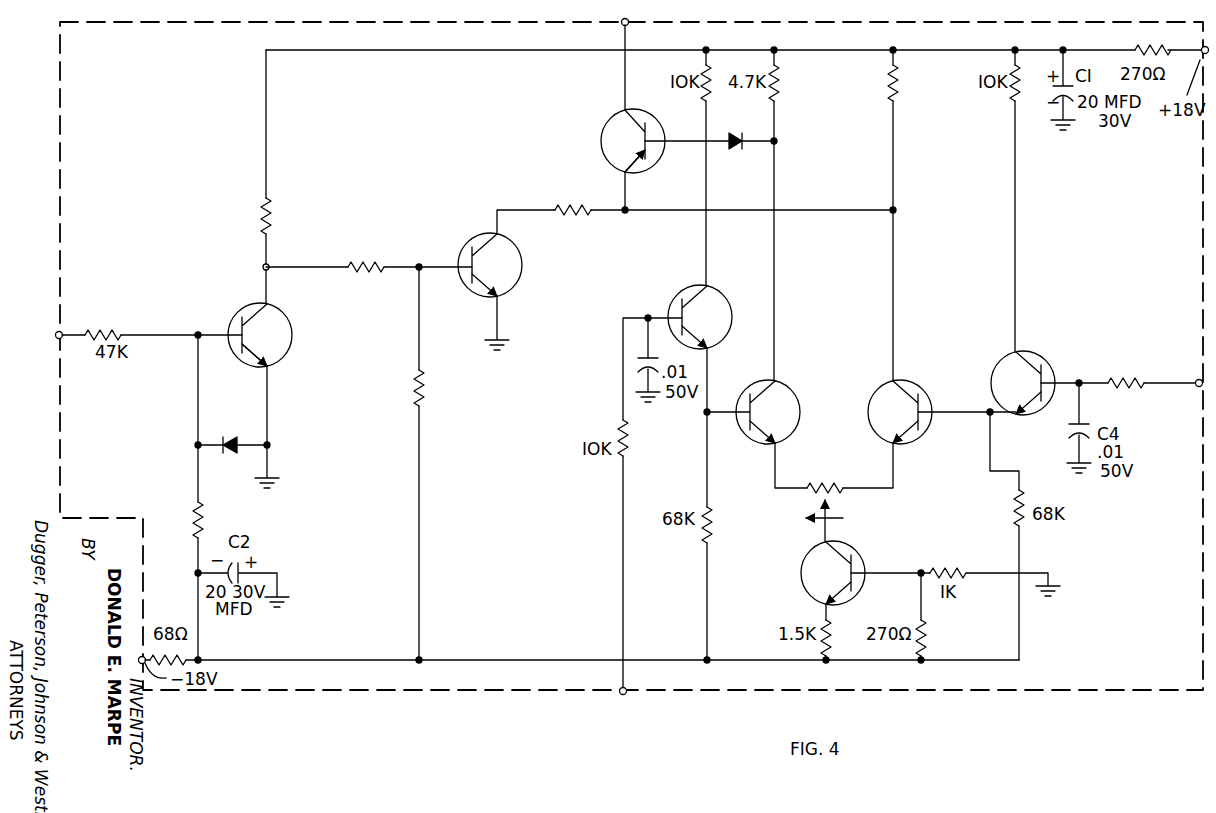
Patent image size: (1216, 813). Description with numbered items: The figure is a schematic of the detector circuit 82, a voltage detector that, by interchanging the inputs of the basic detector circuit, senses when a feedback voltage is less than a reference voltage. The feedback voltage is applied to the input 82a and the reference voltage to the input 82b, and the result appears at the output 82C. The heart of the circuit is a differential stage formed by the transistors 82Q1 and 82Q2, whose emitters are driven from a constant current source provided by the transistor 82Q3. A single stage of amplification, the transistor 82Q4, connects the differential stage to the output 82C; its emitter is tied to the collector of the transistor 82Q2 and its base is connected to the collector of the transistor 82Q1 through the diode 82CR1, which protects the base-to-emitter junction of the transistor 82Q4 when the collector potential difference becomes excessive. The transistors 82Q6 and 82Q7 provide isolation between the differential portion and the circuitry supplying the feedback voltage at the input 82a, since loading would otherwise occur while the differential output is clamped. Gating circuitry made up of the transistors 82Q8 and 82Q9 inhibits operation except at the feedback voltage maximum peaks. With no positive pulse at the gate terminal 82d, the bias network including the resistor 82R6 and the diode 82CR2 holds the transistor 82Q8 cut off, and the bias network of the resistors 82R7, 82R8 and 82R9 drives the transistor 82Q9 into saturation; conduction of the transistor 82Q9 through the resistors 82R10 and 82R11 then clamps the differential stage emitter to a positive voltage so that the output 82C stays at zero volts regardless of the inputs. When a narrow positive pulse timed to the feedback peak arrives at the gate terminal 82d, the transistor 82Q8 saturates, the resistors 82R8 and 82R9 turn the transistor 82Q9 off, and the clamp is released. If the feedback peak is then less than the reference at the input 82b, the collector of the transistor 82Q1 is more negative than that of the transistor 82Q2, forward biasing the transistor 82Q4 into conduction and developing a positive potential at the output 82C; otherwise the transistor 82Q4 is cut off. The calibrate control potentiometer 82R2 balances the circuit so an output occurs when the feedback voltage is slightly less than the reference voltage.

The detector circuit 82 is at (398, 700).
The input 82a is at (1197, 391).
The input 82b is at (627, 695).
The output 82C is at (628, 26).
The gate terminal 82d is at (57, 338).
The transistor 82Q1 is at (746, 441).
The transistor 82Q2 is at (899, 381).
The transistor 82Q3 is at (860, 553).
The transistor 82Q4 is at (633, 173).
The transistor 82Q6 is at (714, 292).
The transistor 82Q7 is at (1043, 348).
The transistor 82Q8 is at (279, 364).
The transistor 82Q9 is at (513, 283).
The calibrate control potentiometer 82R2 is at (813, 485).
The resistor 82R6 is at (203, 510).
The resistor 82R7 is at (272, 204).
The resistor 82R8 is at (352, 262).
The resistor 82R9 is at (426, 370).
The resistor 82R10 is at (557, 216).
The resistor 82R11 is at (899, 86).
The diode 82CR1 is at (746, 135).
The diode 82CR2 is at (222, 441).